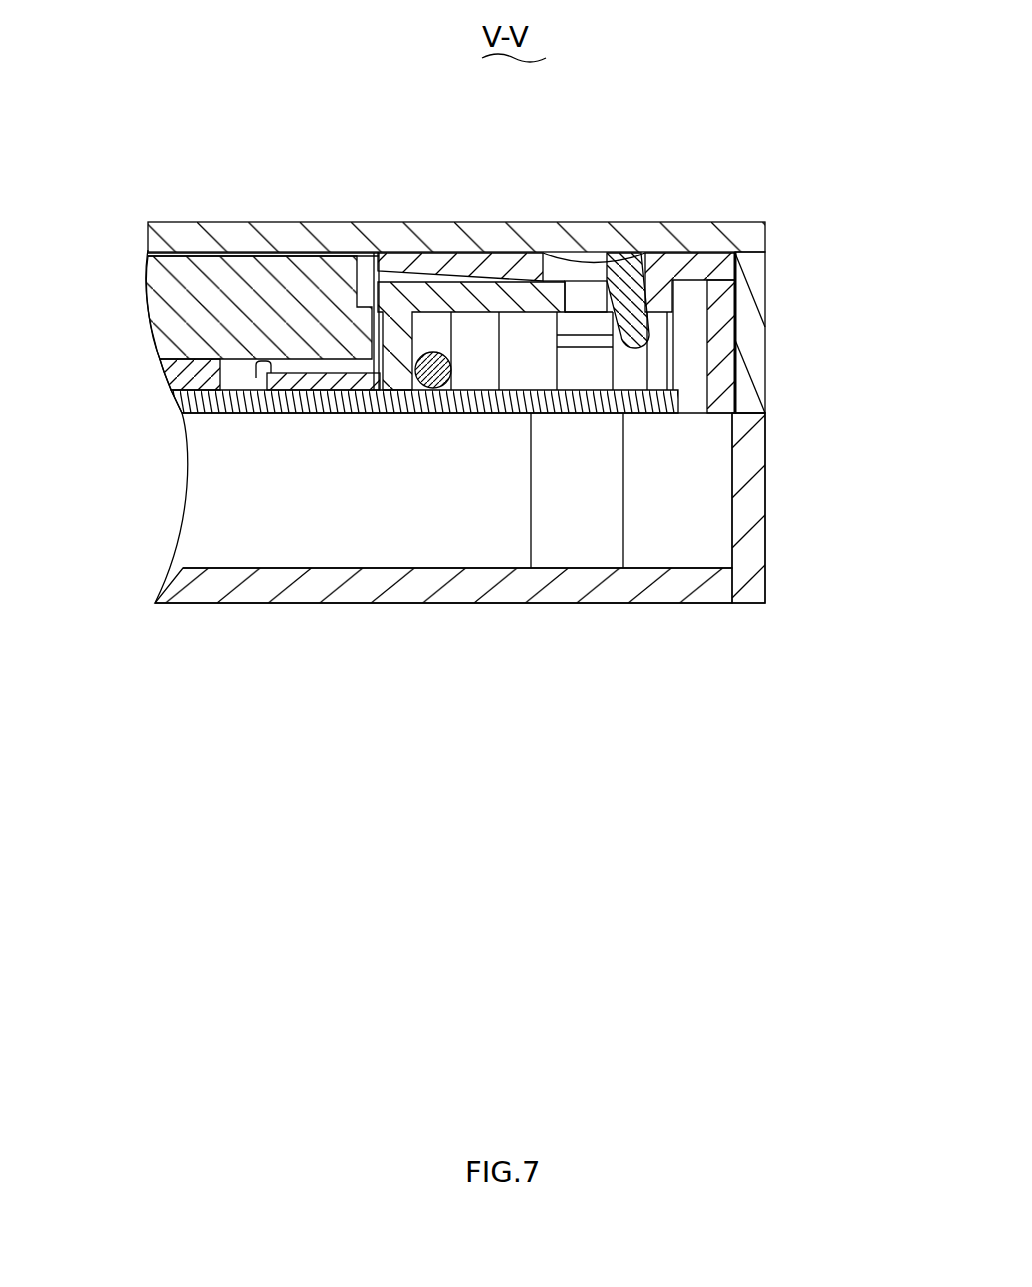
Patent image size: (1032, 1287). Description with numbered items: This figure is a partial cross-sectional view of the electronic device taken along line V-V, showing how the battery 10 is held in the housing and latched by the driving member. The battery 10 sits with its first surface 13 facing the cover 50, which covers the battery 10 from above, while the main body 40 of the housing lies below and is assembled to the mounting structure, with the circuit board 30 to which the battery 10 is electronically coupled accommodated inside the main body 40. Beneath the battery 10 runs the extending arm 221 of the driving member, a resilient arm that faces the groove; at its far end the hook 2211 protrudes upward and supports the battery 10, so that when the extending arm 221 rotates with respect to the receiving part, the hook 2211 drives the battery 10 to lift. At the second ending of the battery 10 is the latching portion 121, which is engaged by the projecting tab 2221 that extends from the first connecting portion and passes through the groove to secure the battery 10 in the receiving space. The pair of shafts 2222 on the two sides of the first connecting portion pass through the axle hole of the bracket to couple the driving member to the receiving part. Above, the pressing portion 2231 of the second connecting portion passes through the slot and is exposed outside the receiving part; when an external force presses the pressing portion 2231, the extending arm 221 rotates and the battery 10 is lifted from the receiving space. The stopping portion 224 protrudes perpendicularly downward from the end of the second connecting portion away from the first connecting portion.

The battery 10 is at (222, 278).
The first surface 13 is at (247, 255).
The latching portion 121 is at (362, 298).
The cover 50 is at (530, 233).
The pressing portion 2231 is at (600, 268).
The stopping portion 224 is at (632, 330).
The hook 2211 is at (257, 366).
The extending arm 221 is at (300, 388).
The projecting tab 2221 is at (373, 413).
The shafts 2222 is at (455, 413).
The circuit board 30 is at (560, 413).
The main body 40 is at (713, 568).